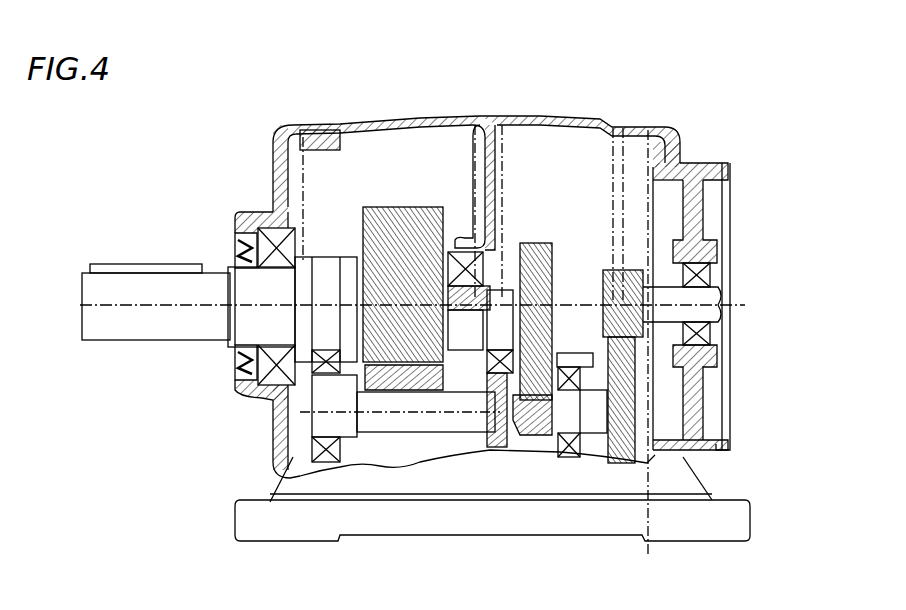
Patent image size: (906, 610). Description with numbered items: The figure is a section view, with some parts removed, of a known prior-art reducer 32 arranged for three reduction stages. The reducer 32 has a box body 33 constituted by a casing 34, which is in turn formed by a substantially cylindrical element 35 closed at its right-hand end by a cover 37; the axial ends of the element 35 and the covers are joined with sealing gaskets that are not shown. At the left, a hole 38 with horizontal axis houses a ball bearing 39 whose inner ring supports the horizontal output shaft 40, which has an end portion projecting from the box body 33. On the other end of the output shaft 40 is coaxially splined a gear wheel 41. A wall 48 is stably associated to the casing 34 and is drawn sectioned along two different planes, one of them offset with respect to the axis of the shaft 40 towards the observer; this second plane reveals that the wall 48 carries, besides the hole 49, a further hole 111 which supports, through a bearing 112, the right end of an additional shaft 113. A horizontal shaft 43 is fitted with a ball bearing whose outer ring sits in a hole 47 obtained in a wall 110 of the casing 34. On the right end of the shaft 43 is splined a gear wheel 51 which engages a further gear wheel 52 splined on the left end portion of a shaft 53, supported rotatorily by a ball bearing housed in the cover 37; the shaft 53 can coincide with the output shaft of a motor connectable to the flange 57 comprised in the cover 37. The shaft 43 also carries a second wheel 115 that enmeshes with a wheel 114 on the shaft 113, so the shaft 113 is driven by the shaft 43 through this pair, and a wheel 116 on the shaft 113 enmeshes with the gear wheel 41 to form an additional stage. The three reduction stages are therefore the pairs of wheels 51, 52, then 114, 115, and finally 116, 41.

The reducer 32 is at (533, 113).
The box body 33 is at (402, 112).
The casing 34 is at (452, 113).
The cylindrical element 35 is at (383, 300).
The cover 37 is at (707, 237).
The hole 38 is at (253, 241).
The ball bearing 39 is at (240, 363).
The output shaft 40 is at (102, 295).
The gear wheel 41 is at (383, 217).
The shaft 43 is at (367, 418).
The hole 47 is at (572, 430).
The wall 48 is at (496, 122).
The hole 49 is at (446, 292).
The gear wheel 51 is at (638, 356).
The gear wheel 52 is at (712, 264).
The shaft 53 is at (702, 303).
The flange 57 is at (720, 426).
The wall 110 is at (585, 352).
The hole 111 is at (490, 365).
The bearing 112 is at (519, 385).
The shaft 113 is at (240, 393).
The wheel 114 is at (537, 247).
The second wheel 115 is at (530, 430).
The wheel 116 is at (363, 267).